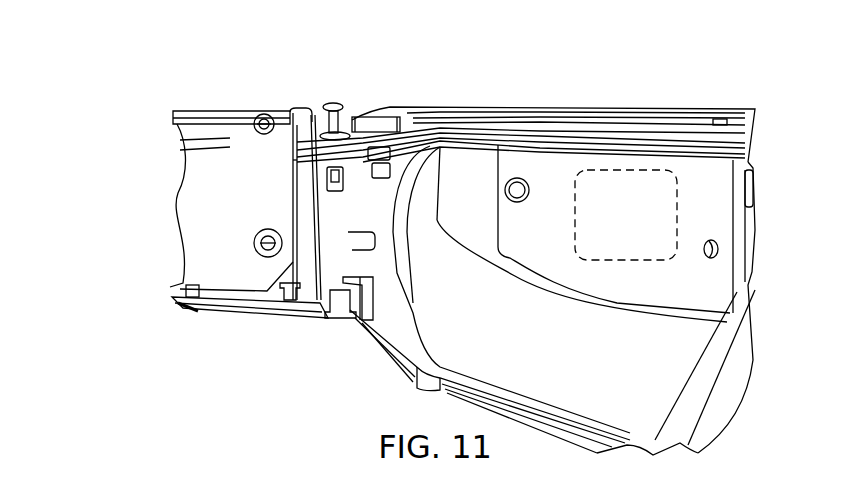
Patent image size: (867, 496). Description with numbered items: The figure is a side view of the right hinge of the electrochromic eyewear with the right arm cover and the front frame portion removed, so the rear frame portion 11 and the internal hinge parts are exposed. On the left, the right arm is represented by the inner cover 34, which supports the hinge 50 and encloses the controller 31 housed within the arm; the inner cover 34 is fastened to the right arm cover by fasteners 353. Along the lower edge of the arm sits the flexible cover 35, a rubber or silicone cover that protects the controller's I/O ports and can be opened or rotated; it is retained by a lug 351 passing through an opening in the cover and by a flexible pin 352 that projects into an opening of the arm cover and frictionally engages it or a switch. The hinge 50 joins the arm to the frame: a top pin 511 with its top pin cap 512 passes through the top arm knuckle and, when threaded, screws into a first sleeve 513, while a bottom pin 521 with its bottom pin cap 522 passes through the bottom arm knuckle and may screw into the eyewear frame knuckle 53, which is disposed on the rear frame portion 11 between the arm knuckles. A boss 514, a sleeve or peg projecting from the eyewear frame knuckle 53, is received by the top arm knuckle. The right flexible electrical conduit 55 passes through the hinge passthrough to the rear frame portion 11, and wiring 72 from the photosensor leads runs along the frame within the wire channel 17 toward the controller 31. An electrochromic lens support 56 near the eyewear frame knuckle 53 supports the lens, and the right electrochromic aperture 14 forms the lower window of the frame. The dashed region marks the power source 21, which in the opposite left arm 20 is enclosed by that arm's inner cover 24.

The rear frame portion 11 is at (515, 110).
The right electrochromic aperture 14 is at (518, 392).
The wire channel 17 is at (583, 133).
The left arm 20 is at (637, 313).
The power source 21 is at (607, 218).
The inner cover 24 is at (530, 251).
The controller 31 is at (189, 203).
The inner cover 34 is at (196, 111).
The flexible cover 35 is at (233, 314).
The hinge 50 is at (320, 156).
The eyewear frame knuckle 53 is at (395, 210).
The right flexible electrical conduit 55 is at (392, 158).
The electrochromic lens support 56 is at (378, 240).
The wiring 72 is at (740, 158).
The lug 351 is at (283, 285).
The flexible pin 352 is at (190, 285).
The fastener 353 is at (262, 115).
The top pin 511 is at (335, 107).
The top pin cap 512 is at (342, 104).
The first sleeve 513 is at (293, 160).
The boss 514 is at (330, 185).
The bottom pin 521 is at (362, 282).
The bottom pin cap 522 is at (338, 320).